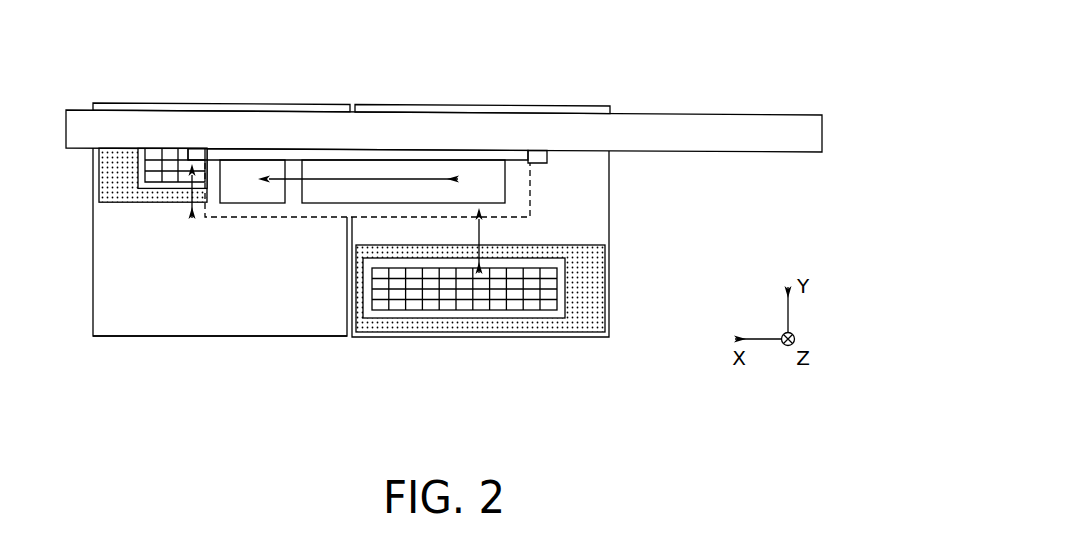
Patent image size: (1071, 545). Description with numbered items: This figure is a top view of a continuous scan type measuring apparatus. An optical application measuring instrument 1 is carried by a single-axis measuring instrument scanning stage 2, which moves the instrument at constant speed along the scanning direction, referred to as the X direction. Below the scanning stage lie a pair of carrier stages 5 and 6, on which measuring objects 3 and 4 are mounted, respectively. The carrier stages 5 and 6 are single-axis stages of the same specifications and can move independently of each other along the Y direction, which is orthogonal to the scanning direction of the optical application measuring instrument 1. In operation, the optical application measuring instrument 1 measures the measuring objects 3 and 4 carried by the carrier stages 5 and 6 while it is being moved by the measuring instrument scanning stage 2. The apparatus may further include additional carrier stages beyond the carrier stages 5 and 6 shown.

The optical application measuring instrument 1 is at (520, 183).
The single-axis measuring instrument scanning stage 2 is at (679, 132).
The measuring object 3 is at (170, 177).
The measuring object 4 is at (480, 295).
The carrier stage 5 is at (273, 297).
The carrier stage 6 is at (609, 193).